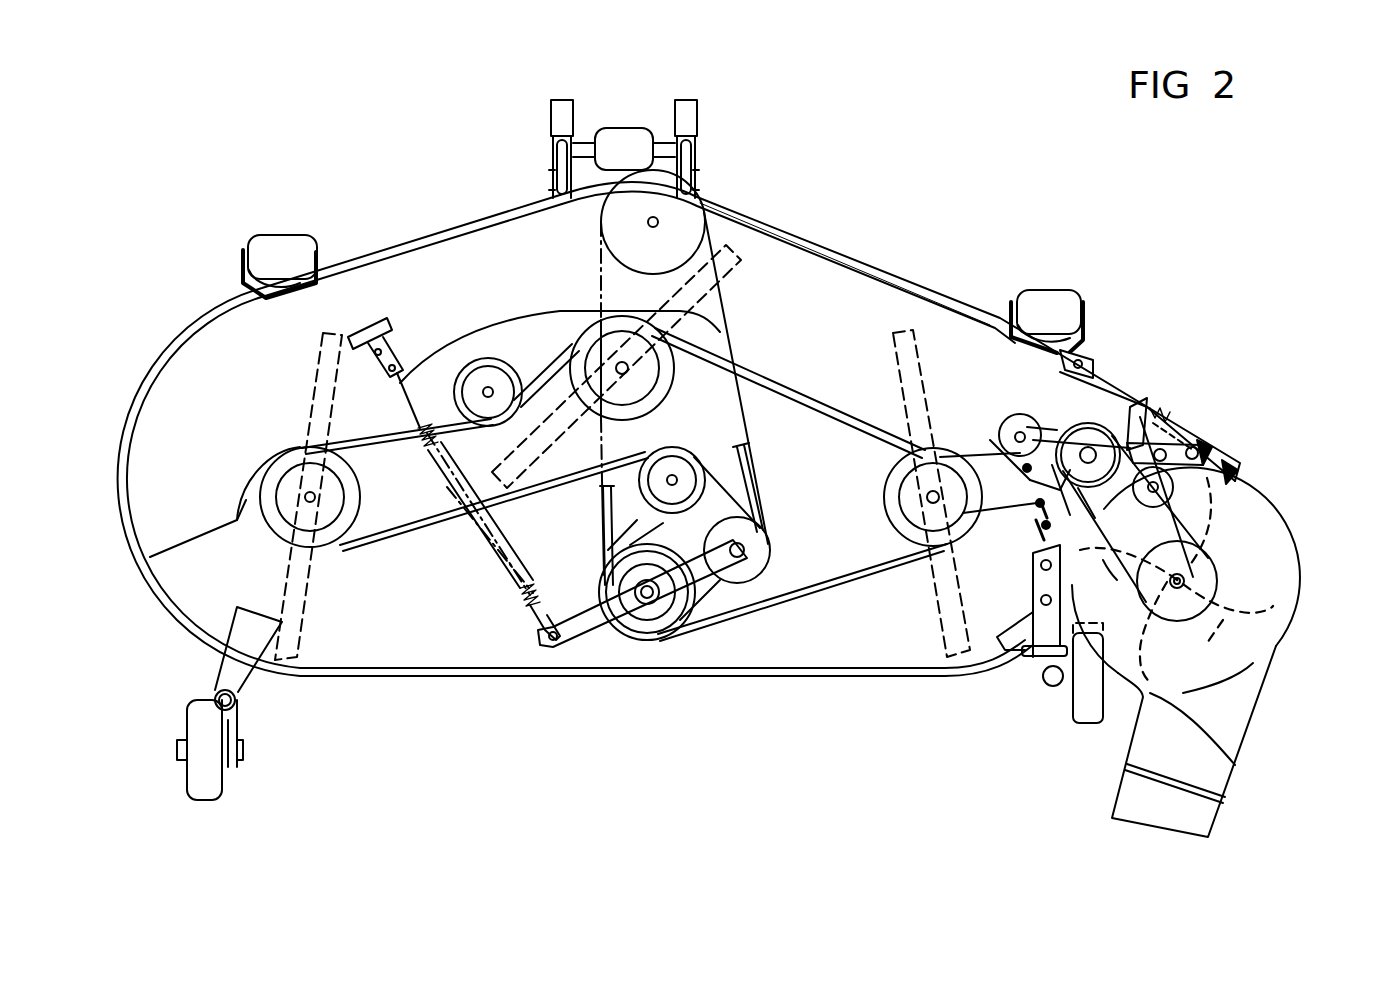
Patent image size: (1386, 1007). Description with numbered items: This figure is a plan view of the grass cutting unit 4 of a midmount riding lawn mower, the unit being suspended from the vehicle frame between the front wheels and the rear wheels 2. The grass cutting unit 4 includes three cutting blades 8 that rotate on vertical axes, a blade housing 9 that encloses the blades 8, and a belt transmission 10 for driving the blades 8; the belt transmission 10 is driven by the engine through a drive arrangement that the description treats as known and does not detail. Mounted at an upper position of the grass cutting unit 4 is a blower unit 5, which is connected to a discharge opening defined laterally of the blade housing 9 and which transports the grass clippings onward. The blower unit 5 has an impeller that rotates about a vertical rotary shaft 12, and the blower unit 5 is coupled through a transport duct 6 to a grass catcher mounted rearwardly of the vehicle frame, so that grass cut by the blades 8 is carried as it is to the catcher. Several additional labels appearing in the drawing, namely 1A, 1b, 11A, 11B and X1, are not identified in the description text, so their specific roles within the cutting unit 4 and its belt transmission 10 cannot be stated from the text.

The blade drive pulley 1A is at (647, 625).
The drive pulley 1b is at (928, 495).
The rear wheels 2 is at (822, 657).
The grass cutting unit 4 is at (1216, 630).
The blower unit 5 is at (1298, 510).
The transport duct 6 is at (1167, 815).
The cutting blades 8 is at (298, 648).
The blade housing 9 is at (835, 250).
The belt transmission 10 is at (803, 390).
The tension arm 11A is at (1048, 493).
The support bracket 11B is at (1102, 570).
The vertical rotary shaft 12 is at (1187, 578).
The rotation axis X1 is at (315, 503).